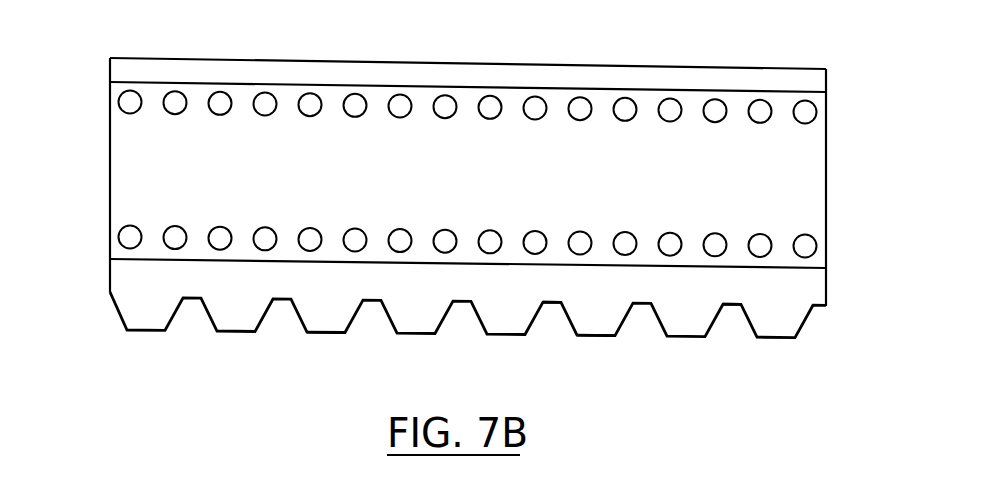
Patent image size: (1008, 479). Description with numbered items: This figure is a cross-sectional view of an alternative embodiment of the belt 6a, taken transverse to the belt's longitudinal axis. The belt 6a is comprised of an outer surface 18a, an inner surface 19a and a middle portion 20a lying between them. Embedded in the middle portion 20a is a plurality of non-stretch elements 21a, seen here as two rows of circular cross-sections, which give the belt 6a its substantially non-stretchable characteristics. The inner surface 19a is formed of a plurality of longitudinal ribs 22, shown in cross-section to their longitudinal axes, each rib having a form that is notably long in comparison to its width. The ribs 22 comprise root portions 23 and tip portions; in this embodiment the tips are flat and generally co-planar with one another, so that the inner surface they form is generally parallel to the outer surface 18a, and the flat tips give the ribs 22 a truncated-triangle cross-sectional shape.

The belt 6a is at (464, 200).
The outer surface 18a is at (110, 73).
The inner surface 19a is at (110, 281).
The middle portion 20a is at (110, 173).
The non-stretch elements 21a is at (315, 96).
The longitudinal ribs 22 is at (328, 320).
The root portions 23 is at (548, 302).